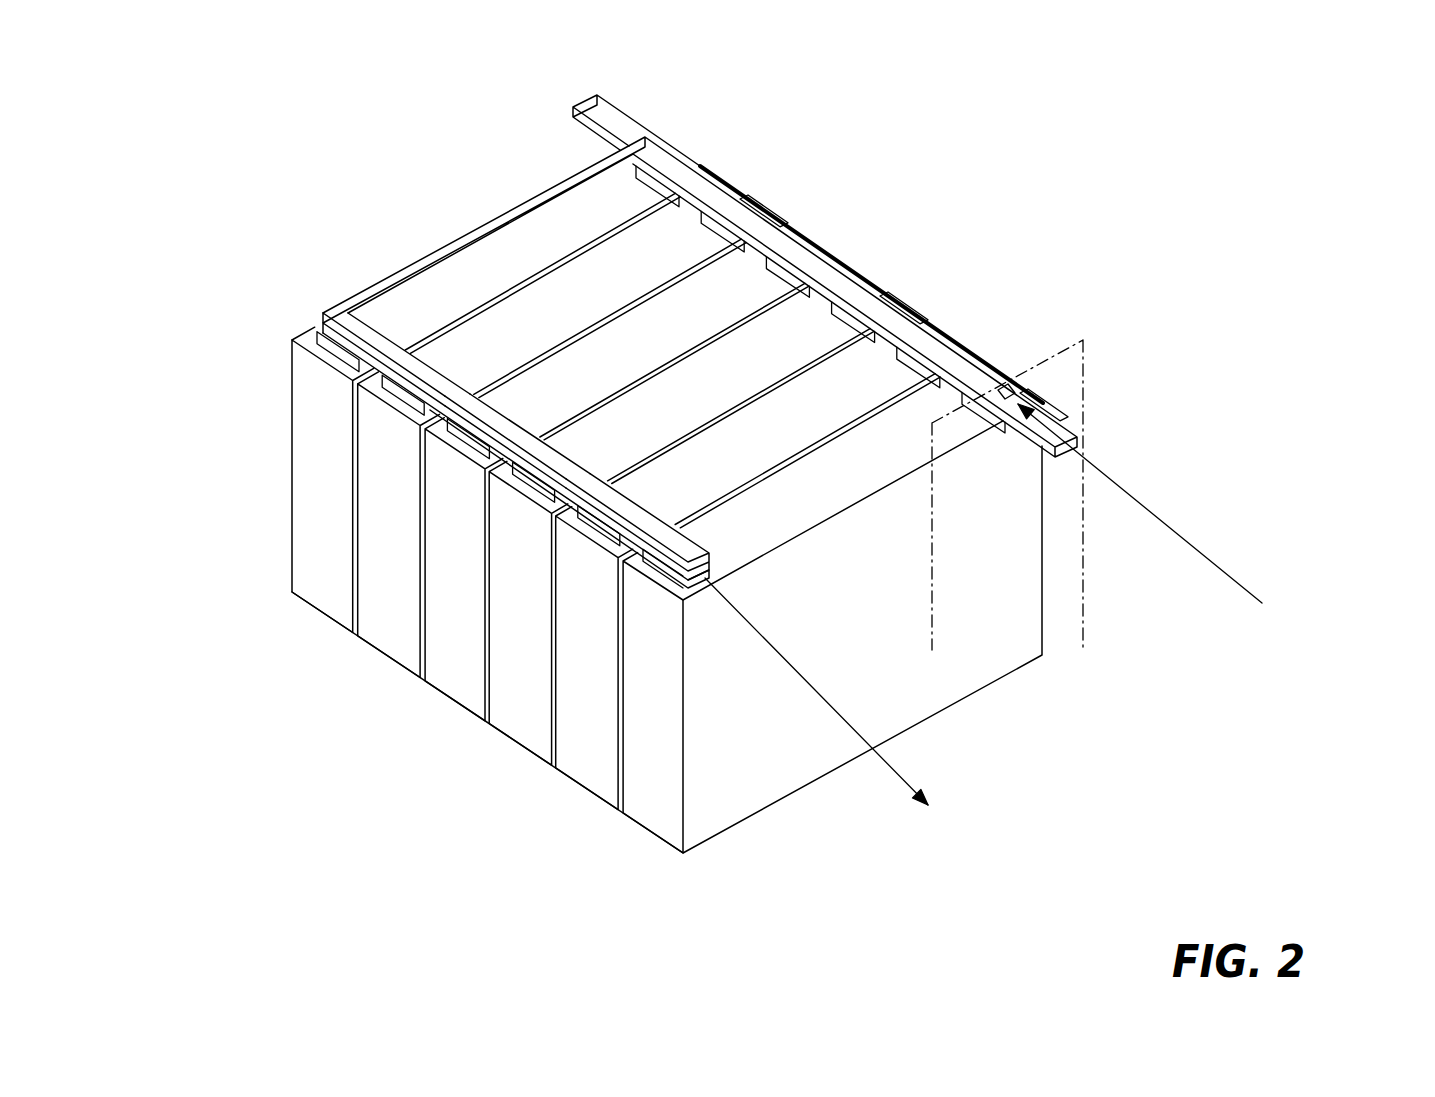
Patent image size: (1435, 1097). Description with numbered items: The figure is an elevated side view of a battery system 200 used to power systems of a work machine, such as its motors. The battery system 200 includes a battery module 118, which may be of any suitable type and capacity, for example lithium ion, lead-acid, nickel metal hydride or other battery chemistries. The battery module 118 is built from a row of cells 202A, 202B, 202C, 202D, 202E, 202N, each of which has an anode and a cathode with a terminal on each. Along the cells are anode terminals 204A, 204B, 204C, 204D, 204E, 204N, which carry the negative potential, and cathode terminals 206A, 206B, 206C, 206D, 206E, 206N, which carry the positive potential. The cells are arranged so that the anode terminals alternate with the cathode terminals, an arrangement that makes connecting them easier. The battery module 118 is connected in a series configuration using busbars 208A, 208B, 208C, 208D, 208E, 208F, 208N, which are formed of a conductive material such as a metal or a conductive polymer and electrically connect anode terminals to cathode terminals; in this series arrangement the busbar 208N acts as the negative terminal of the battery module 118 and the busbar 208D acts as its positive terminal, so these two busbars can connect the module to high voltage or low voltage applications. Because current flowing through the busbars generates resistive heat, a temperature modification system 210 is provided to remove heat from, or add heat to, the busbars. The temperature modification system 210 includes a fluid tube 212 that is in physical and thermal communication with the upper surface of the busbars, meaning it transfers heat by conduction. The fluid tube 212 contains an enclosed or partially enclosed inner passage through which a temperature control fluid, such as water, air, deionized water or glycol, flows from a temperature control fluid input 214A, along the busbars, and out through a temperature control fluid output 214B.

The battery system 200 is at (1105, 160).
The battery module 118 is at (932, 220).
The cell 202A is at (327, 590).
The cell 202B is at (392, 635).
The cell 202C is at (455, 680).
The cell 202D is at (530, 727).
The cell 202E is at (592, 770).
The cell 202N is at (660, 815).
The anode terminal 204A is at (360, 350).
The anode terminal 204B is at (725, 237).
The anode terminal 204C is at (490, 450).
The anode terminal 204D is at (855, 327).
The anode terminal 204E is at (615, 537).
The anode terminal 204N is at (988, 423).
The cathode terminal 206A is at (657, 190).
The cathode terminal 206B is at (420, 398).
The cathode terminal 206C is at (785, 280).
The cathode terminal 206D is at (545, 493).
The cathode terminal 206E is at (917, 370).
The cathode terminal 206N is at (688, 586).
The busbar 208A is at (388, 333).
The busbar 208B is at (500, 413).
The busbar 208C is at (630, 490).
The busbar 208D is at (618, 115).
The busbar 208E is at (759, 228).
The busbar 208F is at (895, 323).
The busbar 208N is at (1055, 430).
The temperature modification system 210 is at (960, 333).
The fluid tube 212 is at (818, 262).
The temperature control fluid input 214A is at (1303, 705).
The temperature control fluid output 214B is at (965, 941).